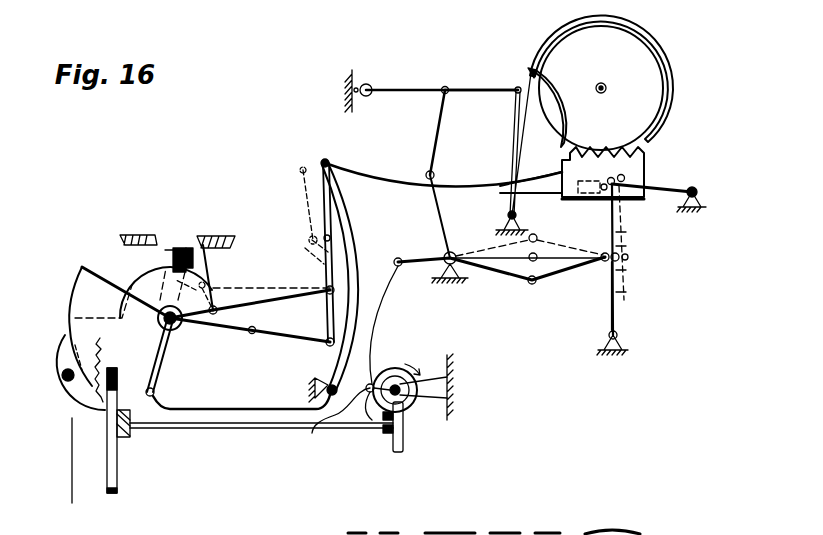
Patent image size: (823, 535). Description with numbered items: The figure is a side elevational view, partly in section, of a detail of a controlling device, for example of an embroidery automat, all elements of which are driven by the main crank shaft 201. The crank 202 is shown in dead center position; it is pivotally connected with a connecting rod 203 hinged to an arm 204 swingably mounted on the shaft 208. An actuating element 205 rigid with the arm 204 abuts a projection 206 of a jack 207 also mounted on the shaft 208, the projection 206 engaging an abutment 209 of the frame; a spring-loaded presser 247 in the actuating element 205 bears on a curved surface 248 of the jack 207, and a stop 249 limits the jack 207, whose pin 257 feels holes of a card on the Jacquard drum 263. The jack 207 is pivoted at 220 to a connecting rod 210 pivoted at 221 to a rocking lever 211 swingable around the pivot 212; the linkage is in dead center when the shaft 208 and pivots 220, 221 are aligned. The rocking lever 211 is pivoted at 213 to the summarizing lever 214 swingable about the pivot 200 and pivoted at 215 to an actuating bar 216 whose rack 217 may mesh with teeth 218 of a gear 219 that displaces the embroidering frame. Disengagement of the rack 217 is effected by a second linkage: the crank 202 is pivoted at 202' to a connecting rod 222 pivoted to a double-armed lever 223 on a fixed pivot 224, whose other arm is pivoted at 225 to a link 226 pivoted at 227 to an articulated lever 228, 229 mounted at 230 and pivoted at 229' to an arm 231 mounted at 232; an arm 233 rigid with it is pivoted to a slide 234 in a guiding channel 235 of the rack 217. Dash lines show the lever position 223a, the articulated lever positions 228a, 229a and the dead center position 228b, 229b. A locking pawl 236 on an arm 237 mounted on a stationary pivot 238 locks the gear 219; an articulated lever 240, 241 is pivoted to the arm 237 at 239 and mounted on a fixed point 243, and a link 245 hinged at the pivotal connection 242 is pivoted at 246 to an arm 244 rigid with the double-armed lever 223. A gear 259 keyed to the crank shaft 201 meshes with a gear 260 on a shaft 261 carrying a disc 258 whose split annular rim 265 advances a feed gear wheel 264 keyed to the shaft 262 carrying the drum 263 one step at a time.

The pivot 200 is at (332, 417).
The main crank shaft 201 is at (405, 372).
The crank 202 is at (383, 369).
The pivot 202' is at (363, 421).
The connecting rod 203 is at (213, 407).
The arm 204 is at (168, 366).
The actuating element 205 is at (178, 248).
The projection 206 is at (192, 248).
The jack 207 is at (148, 298).
The shaft 208 is at (150, 388).
The abutment 209 is at (207, 236).
The connecting rod 210 is at (268, 298).
The rocking lever 211 is at (318, 268).
The pivot 212 is at (325, 346).
The pivot 213 is at (322, 236).
The summarizing lever 214 is at (352, 286).
The pivot 215 is at (324, 160).
The actuating bar 216 is at (372, 170).
The rack 217 is at (622, 172).
The teeth 218 is at (648, 143).
The gear 219 is at (638, 42).
The pivot 220 is at (218, 276).
The pivot 221 is at (326, 295).
The connecting rod 222 is at (386, 342).
The double-armed lever 223 is at (398, 258).
The position of double-armed lever 223a is at (476, 256).
The fixed pivot 224 is at (451, 284).
The pivot 225 is at (531, 288).
The link 226 is at (540, 264).
The pivot 227 is at (628, 257).
The articulated lever 228 is at (612, 302).
The position of articulated lever 228a is at (622, 270).
The dead center position of articulated lever 228b is at (622, 290).
The articulated lever 229 is at (599, 243).
The pivot 229' is at (664, 171).
The position of articulated lever 229a is at (627, 247).
The dead center position of articulated lever 229b is at (627, 231).
The stationary mounting point 230 is at (618, 335).
The arm 231 is at (700, 184).
The stationary pivot 232 is at (700, 197).
The arm 233 is at (616, 200).
The slide 234 is at (552, 196).
The guiding channel 235 is at (525, 194).
The locking pawl 236 is at (531, 72).
The arm 237 is at (536, 110).
The stationary pivot 238 is at (505, 213).
The pivot 239 is at (517, 86).
The articulated lever element 240 is at (478, 89).
The articulated lever element 241 is at (407, 89).
The pivotal connection 242 is at (446, 86).
The fixed point 243 is at (363, 83).
The arm 244 is at (445, 238).
The link 245 is at (442, 96).
The pivot 246 is at (434, 172).
The spring-loaded presser 247 is at (173, 250).
The curved surface 248 is at (82, 272).
The stop 249 is at (135, 234).
The pin 257 is at (70, 310).
The disc 258 is at (112, 494).
The gear 259 is at (410, 402).
The gear 260 is at (398, 453).
The shaft 261 is at (278, 430).
The shaft 262 is at (66, 412).
The Jacquard drum 263 is at (71, 471).
The feed gear wheel 264 is at (92, 356).
The annular rim 265 is at (108, 470).